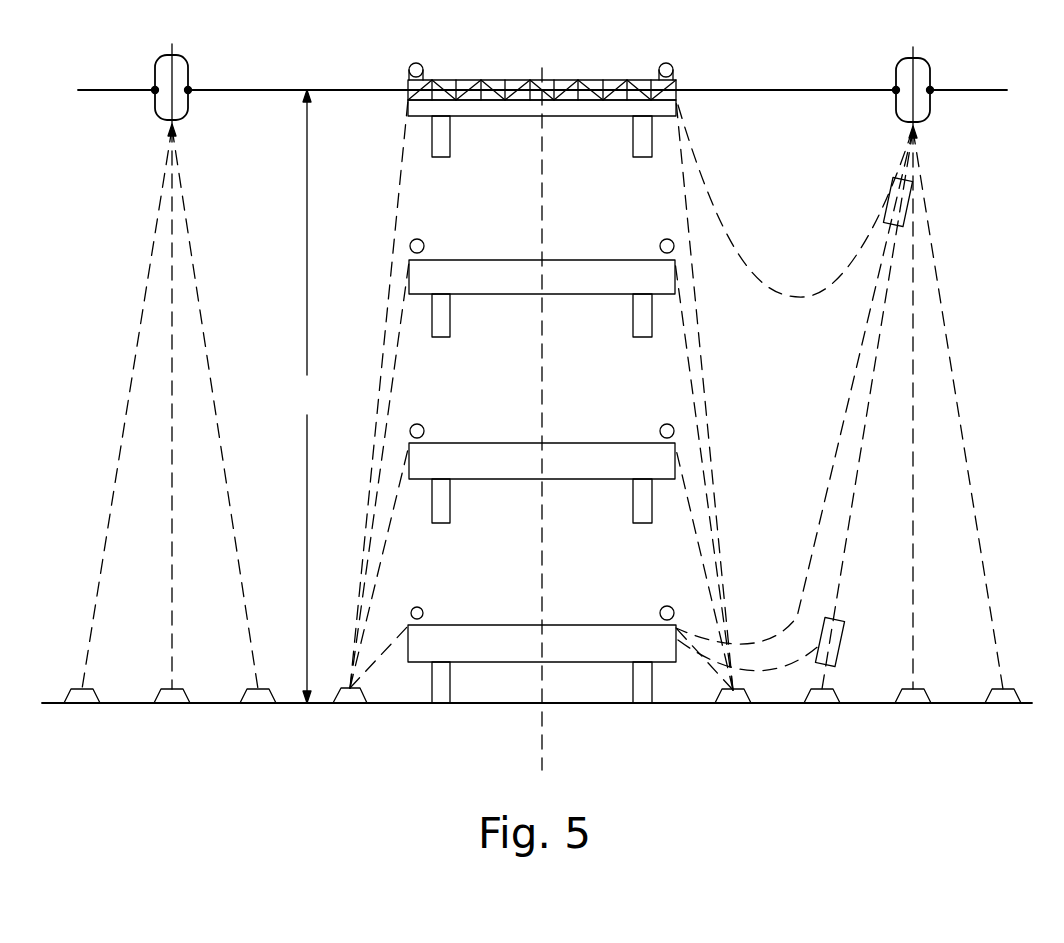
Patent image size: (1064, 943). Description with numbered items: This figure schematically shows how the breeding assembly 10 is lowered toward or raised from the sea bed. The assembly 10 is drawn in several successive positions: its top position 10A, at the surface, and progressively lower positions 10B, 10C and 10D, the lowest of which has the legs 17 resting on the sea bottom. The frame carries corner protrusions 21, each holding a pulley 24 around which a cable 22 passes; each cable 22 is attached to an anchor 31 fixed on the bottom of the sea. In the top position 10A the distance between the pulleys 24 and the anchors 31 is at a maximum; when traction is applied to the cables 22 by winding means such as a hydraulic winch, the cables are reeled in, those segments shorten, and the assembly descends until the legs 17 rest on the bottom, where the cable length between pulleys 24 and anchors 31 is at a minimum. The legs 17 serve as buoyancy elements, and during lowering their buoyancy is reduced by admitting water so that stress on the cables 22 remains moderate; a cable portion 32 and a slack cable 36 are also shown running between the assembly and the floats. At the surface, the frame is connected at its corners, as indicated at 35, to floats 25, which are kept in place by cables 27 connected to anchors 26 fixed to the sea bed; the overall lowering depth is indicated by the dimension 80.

The breeding assembly 10 is at (557, 80).
The top position of the breeding assembly 10A is at (581, 62).
The second platform 10B is at (676, 280).
The third platform 10C is at (676, 462).
The fourth platform 10D is at (571, 671).
The legs 17 is at (437, 148).
The corner protrusion 21 is at (421, 610).
The cable 22 is at (398, 160).
The pulley 24 is at (420, 66).
The float 25 is at (176, 91).
The anchor 26 is at (85, 695).
The cable 27 is at (125, 395).
The anchor 31 is at (340, 697).
The cable 32 is at (380, 658).
The connection of frame to floats 35 is at (810, 88).
The cable 36 is at (732, 228).
The depth dimension 80 is at (300, 396).